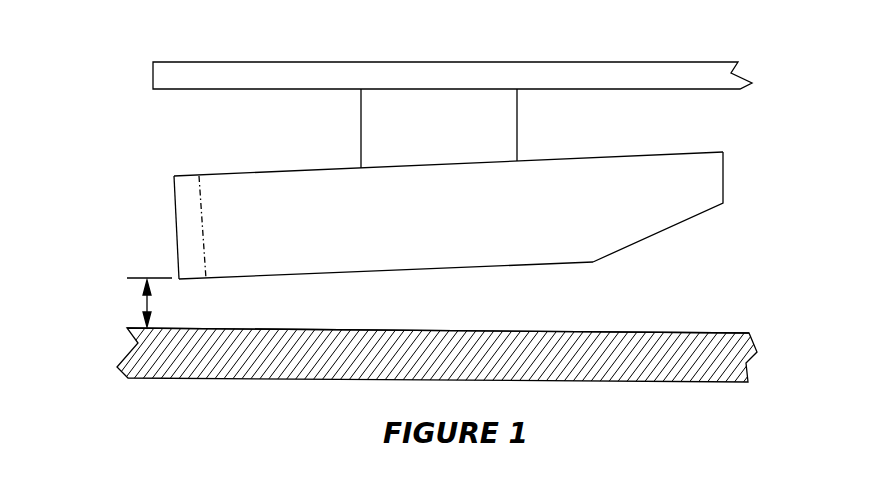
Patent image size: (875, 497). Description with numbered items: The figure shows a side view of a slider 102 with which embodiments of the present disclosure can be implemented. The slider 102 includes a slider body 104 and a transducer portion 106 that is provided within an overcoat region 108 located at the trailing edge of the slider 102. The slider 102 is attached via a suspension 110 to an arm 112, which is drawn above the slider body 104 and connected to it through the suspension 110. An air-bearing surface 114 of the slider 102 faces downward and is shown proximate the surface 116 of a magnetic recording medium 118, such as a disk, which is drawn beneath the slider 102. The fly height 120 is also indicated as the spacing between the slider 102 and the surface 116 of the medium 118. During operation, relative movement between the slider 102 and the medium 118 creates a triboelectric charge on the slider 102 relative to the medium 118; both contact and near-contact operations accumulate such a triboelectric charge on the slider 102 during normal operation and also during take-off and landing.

The slider 102 is at (481, 220).
The slider body 104 is at (630, 160).
The transducer portion 106 is at (195, 293).
The overcoat region 108 is at (177, 214).
The suspension 110 is at (518, 122).
The arm 112 is at (676, 70).
The air-bearing surface 114 is at (468, 263).
The surface 116 is at (633, 329).
The magnetic recording medium 118 is at (607, 372).
The fly height 120 is at (135, 302).